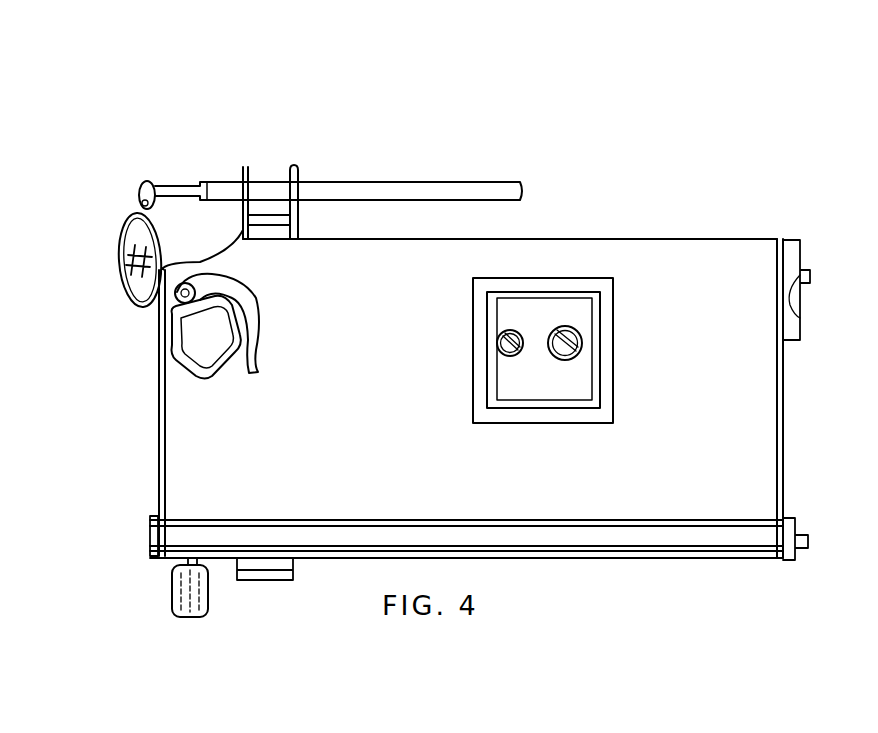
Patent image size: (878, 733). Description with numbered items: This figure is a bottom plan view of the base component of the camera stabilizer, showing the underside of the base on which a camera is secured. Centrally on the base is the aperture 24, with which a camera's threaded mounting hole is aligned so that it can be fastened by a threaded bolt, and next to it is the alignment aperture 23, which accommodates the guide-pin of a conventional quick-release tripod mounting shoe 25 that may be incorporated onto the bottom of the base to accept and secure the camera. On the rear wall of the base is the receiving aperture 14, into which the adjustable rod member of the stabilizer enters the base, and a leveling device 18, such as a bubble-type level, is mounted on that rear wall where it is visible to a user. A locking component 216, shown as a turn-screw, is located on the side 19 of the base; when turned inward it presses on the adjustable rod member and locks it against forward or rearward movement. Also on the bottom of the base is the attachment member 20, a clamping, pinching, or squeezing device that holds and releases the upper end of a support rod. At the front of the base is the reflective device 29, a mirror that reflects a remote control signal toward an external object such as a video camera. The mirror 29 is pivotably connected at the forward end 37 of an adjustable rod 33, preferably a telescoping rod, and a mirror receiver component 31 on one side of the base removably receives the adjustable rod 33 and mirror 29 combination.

The receiving aperture 14 is at (792, 565).
The leveling device 18 is at (803, 243).
The side 19 is at (610, 562).
The attachment member 20 is at (256, 376).
The alignment aperture 23 is at (498, 343).
The aperture 24 is at (586, 345).
The tripod mounting shoe 25 is at (616, 426).
The reflective device 29 is at (138, 310).
The mirror receiver component 31 is at (246, 166).
The adjustable rod 33 is at (212, 181).
The forward end 37 is at (144, 183).
The locking component 216 is at (215, 607).